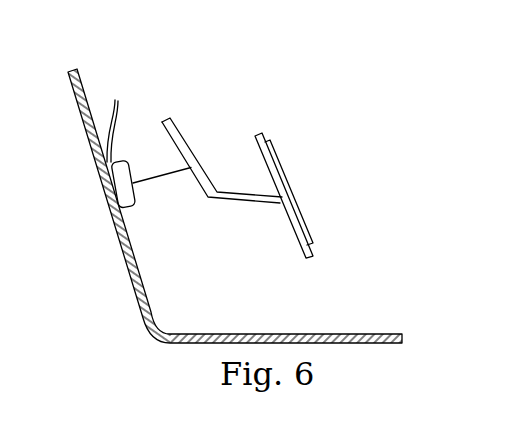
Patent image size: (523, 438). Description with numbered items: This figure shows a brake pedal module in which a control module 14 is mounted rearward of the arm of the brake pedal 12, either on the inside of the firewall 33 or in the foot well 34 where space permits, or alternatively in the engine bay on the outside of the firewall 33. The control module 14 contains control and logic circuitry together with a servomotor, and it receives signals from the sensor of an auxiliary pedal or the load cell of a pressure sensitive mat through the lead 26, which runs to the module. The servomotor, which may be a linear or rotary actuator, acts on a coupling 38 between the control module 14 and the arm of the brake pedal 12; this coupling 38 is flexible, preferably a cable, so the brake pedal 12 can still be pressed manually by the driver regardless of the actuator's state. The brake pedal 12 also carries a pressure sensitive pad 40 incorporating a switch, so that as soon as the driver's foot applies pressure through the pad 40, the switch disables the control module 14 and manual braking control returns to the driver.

The brake pedal 12 is at (293, 101).
The control module 14 is at (141, 226).
The lead 26 is at (117, 121).
The firewall 33 is at (125, 263).
The foot well 34 is at (323, 290).
The coupling 38 is at (167, 178).
The pressure sensitive pad 40 is at (319, 221).